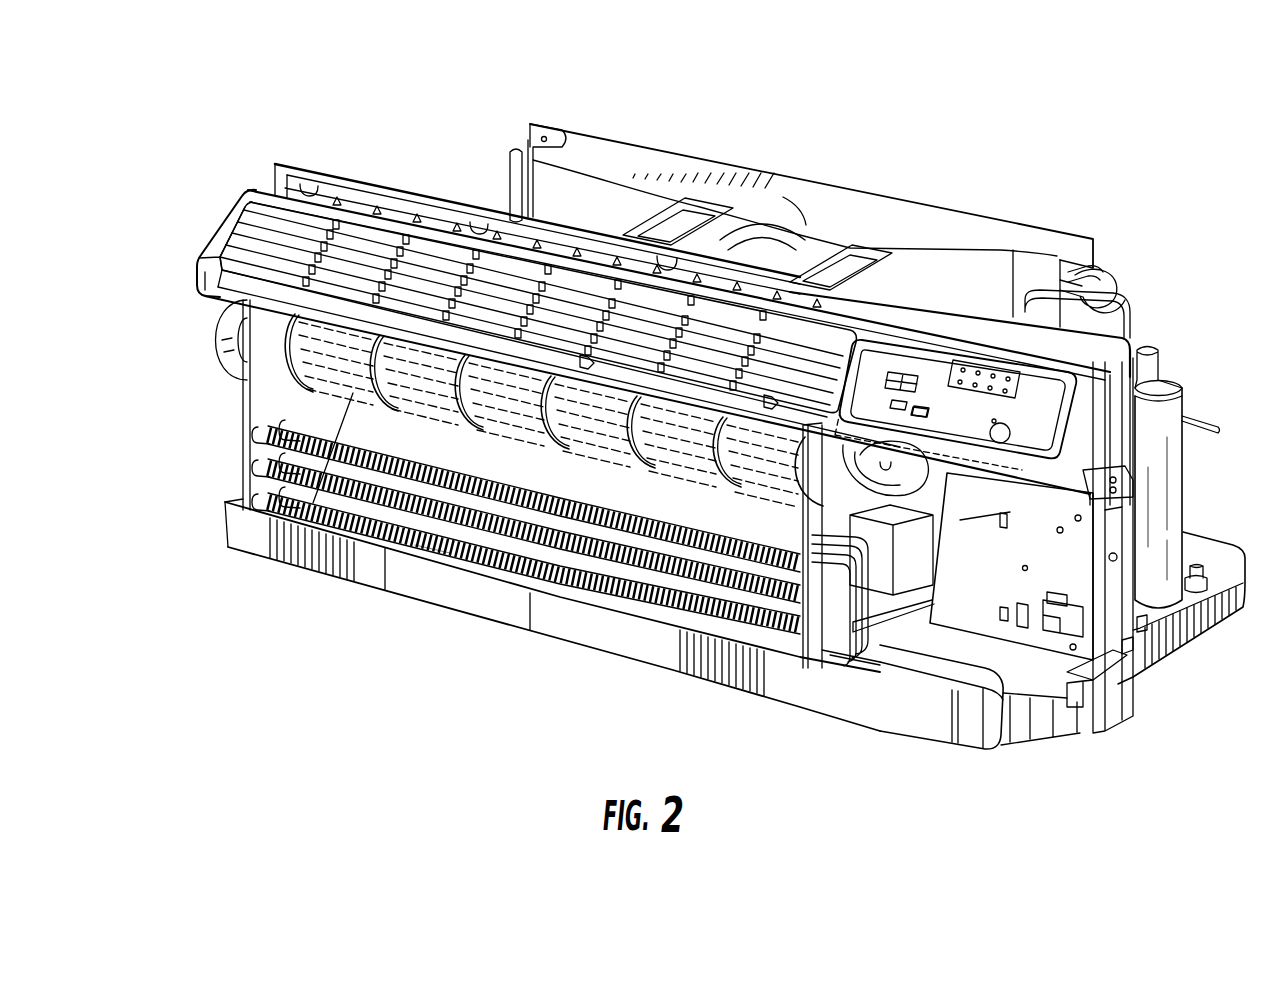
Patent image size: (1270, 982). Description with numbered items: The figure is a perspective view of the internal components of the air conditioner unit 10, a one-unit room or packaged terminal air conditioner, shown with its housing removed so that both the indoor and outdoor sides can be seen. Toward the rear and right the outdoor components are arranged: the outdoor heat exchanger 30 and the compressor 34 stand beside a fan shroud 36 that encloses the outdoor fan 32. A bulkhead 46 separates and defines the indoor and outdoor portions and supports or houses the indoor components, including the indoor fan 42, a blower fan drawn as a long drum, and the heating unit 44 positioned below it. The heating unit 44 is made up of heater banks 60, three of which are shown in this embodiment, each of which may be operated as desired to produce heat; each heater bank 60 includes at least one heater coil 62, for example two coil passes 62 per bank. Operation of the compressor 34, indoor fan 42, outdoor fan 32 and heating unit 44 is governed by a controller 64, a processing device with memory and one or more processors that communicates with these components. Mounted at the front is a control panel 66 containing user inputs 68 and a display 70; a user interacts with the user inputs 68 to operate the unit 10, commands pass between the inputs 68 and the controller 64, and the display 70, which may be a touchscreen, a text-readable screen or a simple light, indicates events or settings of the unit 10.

The air conditioner unit 10 is at (385, 98).
The outdoor heat exchanger 30 is at (1098, 268).
The outdoor fan 32 is at (768, 245).
The compressor 34 is at (1168, 378).
The fan shroud 36 is at (614, 147).
The indoor fan 42 is at (303, 383).
The heating unit 44 is at (604, 610).
The bulkhead 46 is at (1133, 643).
The heater bank 60 is at (259, 435).
The heater coil 62 is at (443, 553).
The controller 64 is at (962, 478).
The control panel 66 is at (898, 355).
The user inputs 68 is at (925, 405).
The display 70 is at (1027, 368).